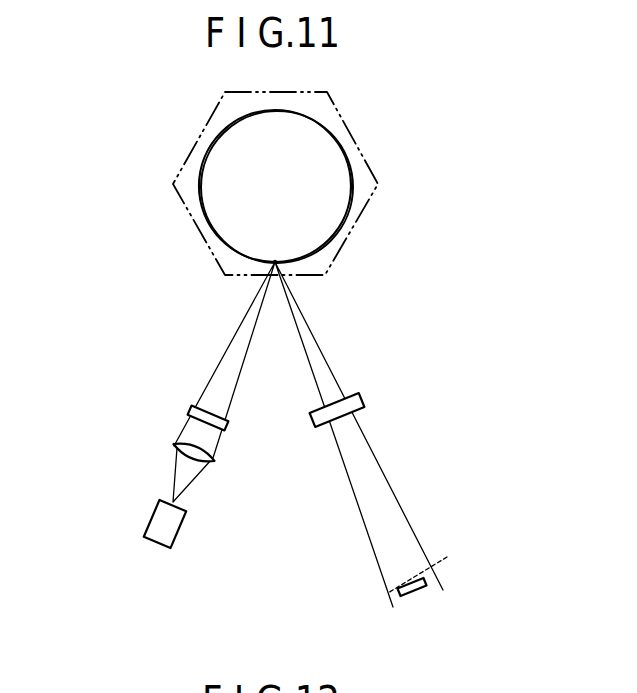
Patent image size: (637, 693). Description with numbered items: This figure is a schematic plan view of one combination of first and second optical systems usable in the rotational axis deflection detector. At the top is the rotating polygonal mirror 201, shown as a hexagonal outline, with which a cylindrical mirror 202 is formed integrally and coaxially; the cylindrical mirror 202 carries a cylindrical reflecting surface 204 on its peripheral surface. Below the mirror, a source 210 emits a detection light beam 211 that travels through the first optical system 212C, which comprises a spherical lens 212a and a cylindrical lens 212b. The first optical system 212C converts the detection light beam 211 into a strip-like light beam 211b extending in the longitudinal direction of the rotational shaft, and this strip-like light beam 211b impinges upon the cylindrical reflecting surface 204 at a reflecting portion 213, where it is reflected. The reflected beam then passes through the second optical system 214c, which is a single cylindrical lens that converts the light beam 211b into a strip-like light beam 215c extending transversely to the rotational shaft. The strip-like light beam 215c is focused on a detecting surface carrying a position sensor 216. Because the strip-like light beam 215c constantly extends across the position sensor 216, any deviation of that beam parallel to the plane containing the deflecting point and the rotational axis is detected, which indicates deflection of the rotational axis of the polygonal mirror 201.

The rotating polygonal mirror 201 is at (348, 130).
The cylindrical mirror 202 is at (345, 151).
The cylindrical reflecting surface 204 is at (277, 187).
The reflecting portion 213 is at (275, 262).
The source 210 is at (153, 517).
The detection light beam 211 is at (175, 470).
The strip-like light beam 211b is at (224, 353).
The first optical system 212C is at (139, 418).
The spherical lens 212a is at (171, 437).
The cylindrical lens 212b is at (193, 408).
The second optical system 214c is at (366, 400).
The strip-like light beam 215c is at (444, 560).
The position sensor 216 is at (412, 594).